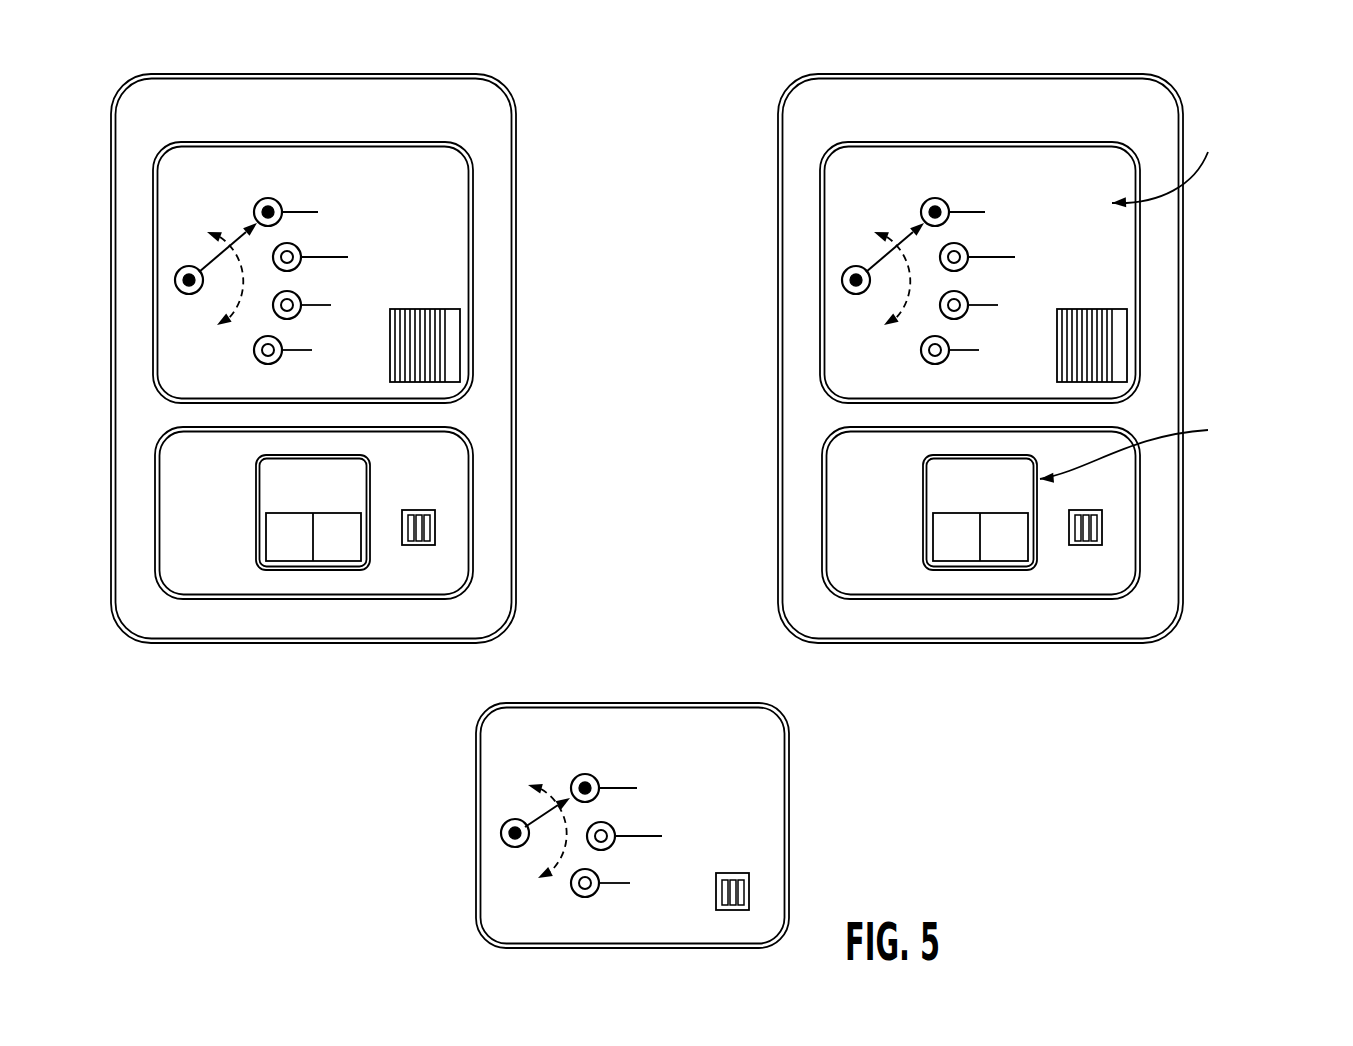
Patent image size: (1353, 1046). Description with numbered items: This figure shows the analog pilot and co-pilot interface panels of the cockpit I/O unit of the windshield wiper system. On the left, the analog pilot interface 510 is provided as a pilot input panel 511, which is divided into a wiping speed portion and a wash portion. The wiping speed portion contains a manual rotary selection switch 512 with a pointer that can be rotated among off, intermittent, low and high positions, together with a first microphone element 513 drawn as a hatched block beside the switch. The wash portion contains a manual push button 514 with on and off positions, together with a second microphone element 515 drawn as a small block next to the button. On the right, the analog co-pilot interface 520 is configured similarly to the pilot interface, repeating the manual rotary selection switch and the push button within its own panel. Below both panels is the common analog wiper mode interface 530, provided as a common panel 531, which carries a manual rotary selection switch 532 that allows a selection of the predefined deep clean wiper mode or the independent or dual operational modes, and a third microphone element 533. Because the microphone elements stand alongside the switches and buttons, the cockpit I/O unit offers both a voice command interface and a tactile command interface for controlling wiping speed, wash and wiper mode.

The analog pilot interface 510 is at (137, 122).
The pilot input panel 511 is at (331, 136).
The manual rotary selection switch 512 is at (447, 203).
The first microphone element 513 is at (452, 350).
The manual push button 514 is at (373, 480).
The second microphone element 515 is at (435, 530).
The analog co-pilot interface 520 is at (1128, 108).
The common analog wiper mode interface 530 is at (770, 785).
The common panel 531 is at (651, 767).
The manual rotary selection switch 532 is at (768, 750).
The third microphone element 533 is at (750, 892).